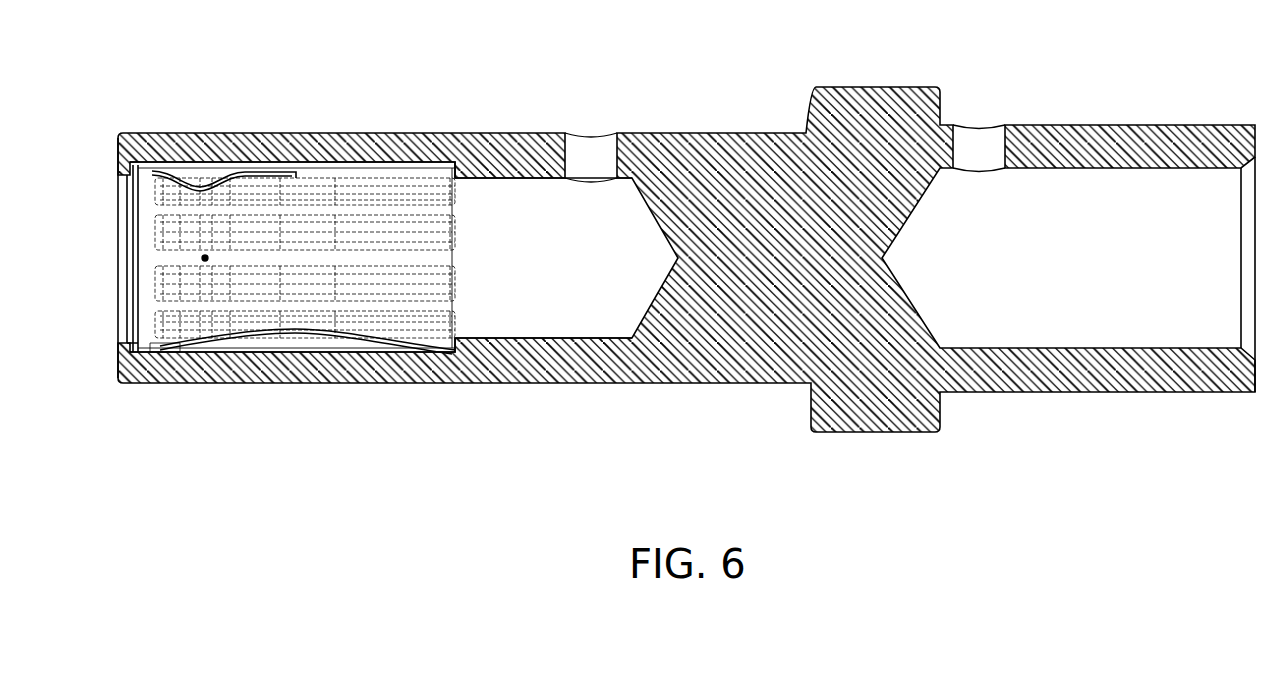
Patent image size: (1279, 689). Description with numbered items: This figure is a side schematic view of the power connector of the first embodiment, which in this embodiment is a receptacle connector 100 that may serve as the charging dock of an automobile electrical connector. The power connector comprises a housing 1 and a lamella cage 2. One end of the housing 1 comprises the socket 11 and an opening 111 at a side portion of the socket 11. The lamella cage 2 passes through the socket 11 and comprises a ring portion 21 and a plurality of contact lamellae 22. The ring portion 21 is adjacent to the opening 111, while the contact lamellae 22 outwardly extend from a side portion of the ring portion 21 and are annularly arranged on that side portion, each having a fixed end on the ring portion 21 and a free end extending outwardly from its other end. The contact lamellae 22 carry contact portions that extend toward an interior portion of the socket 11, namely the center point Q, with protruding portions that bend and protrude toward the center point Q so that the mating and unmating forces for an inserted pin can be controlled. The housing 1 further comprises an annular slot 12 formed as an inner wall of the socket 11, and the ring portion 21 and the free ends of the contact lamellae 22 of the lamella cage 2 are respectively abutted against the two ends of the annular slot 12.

The housing 1 is at (653, 220).
The socket 11 is at (503, 148).
The opening 111 is at (128, 182).
The annular slot 12 is at (331, 163).
The lamella cage 2 is at (252, 256).
The ring portion 21 is at (148, 294).
The contact lamellae 22 is at (332, 338).
The center point Q is at (205, 258).
The receptacle connector 100 is at (652, 276).